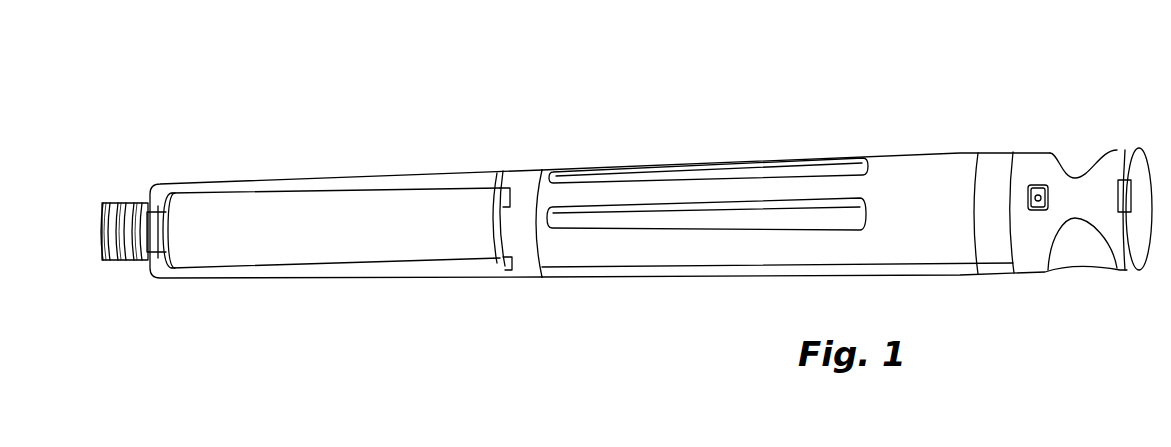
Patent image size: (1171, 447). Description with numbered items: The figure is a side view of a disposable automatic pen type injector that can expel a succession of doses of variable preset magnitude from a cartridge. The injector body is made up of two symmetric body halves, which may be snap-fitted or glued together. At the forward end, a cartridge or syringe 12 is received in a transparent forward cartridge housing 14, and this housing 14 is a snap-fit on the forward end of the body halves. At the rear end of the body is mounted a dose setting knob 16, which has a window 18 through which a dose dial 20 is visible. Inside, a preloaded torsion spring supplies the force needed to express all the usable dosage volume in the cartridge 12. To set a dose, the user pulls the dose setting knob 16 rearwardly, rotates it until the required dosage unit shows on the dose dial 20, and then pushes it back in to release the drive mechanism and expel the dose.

The cartridge 12 is at (321, 208).
The forward cartridge housing 14 is at (408, 262).
The dose setting knob 16 is at (1078, 247).
The window 18 is at (1040, 173).
The dose dial 20 is at (1046, 192).